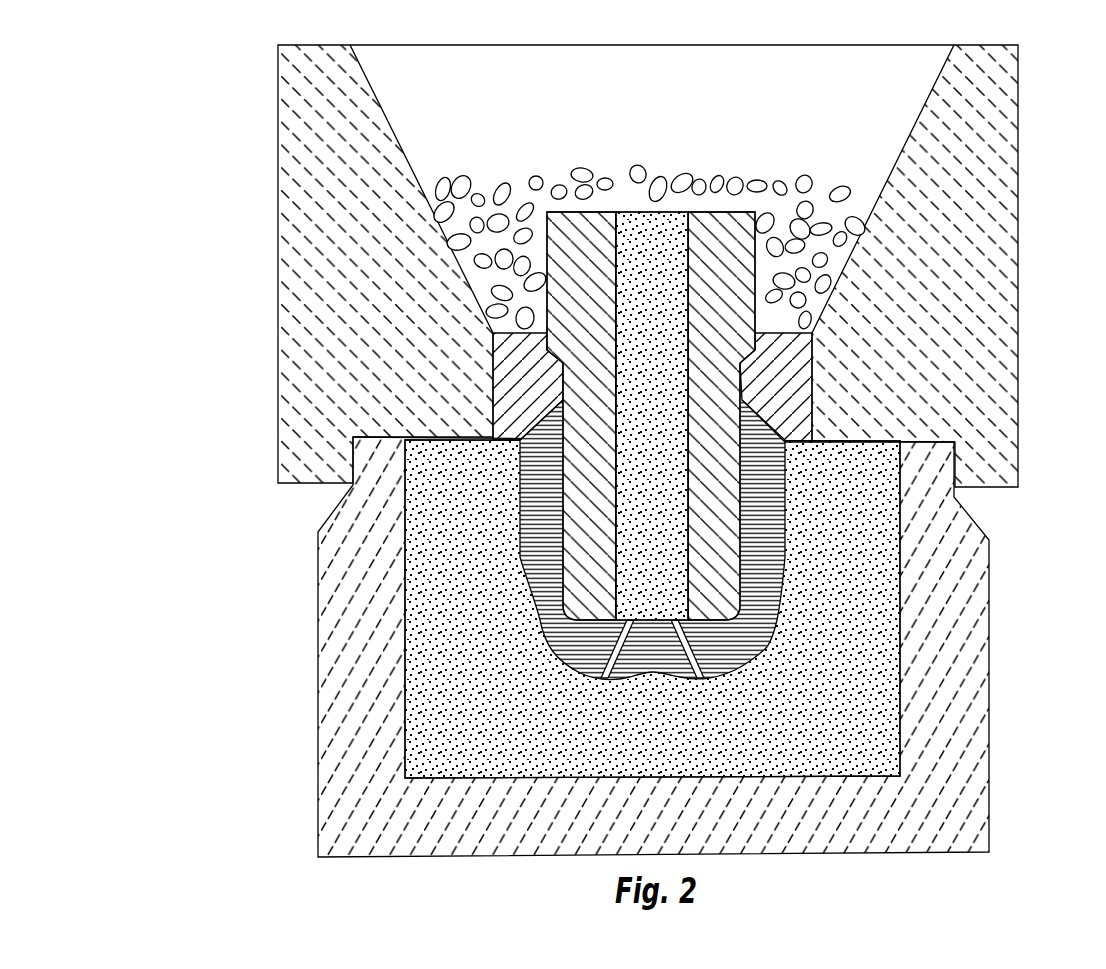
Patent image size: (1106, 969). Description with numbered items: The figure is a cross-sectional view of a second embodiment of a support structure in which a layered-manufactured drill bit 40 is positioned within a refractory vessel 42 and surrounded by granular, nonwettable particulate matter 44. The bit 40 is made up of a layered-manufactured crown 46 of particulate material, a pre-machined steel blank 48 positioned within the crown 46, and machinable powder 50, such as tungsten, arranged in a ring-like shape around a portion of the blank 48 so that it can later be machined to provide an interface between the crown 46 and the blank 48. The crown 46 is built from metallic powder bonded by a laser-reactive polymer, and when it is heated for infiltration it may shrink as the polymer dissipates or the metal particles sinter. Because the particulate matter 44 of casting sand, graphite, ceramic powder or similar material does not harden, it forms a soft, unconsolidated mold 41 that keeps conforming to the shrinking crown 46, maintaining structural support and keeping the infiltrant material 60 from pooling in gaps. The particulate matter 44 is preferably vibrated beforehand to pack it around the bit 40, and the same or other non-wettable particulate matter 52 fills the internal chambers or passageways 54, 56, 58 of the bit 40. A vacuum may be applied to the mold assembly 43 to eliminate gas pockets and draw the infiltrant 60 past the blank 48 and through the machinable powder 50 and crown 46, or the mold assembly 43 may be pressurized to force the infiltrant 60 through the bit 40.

The drill bit 40 is at (809, 530).
The unconsolidated mold 41 is at (873, 440).
The refractory vessel 42 is at (989, 732).
The mold assembly 43 is at (186, 189).
The granular, nonwettable particulate matter 44 is at (873, 577).
The layered-manufactured crown 46 is at (555, 647).
The pre-machined steel blank 48 is at (582, 552).
The machinable powder 50 is at (493, 385).
The non-wettable particulate matter 52 is at (648, 439).
The internal chamber or passageway 54 is at (675, 580).
The internal chamber or passageway 56 is at (607, 680).
The internal chamber or passageway 58 is at (733, 667).
The infiltrant material 60 is at (688, 172).